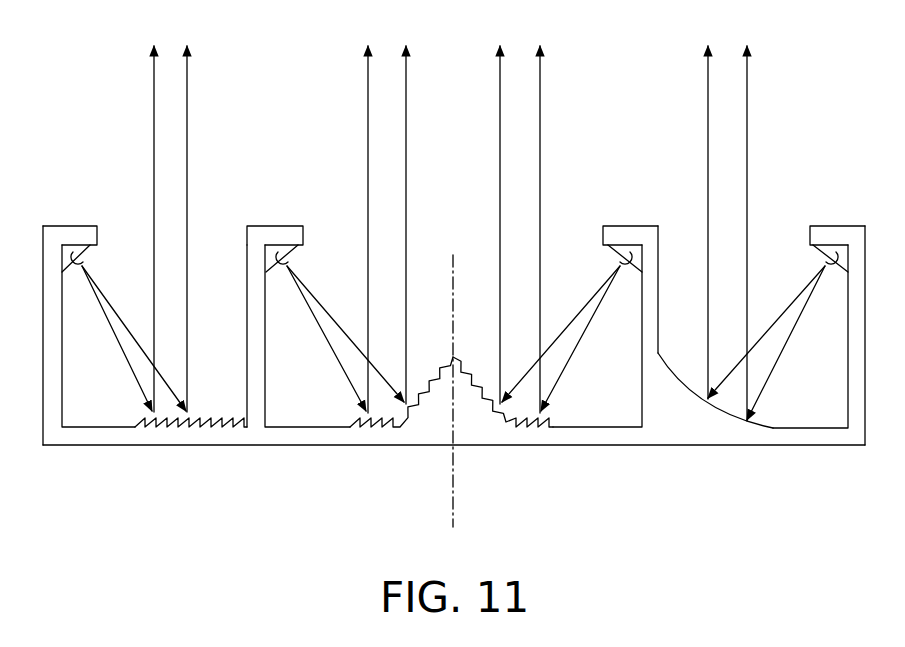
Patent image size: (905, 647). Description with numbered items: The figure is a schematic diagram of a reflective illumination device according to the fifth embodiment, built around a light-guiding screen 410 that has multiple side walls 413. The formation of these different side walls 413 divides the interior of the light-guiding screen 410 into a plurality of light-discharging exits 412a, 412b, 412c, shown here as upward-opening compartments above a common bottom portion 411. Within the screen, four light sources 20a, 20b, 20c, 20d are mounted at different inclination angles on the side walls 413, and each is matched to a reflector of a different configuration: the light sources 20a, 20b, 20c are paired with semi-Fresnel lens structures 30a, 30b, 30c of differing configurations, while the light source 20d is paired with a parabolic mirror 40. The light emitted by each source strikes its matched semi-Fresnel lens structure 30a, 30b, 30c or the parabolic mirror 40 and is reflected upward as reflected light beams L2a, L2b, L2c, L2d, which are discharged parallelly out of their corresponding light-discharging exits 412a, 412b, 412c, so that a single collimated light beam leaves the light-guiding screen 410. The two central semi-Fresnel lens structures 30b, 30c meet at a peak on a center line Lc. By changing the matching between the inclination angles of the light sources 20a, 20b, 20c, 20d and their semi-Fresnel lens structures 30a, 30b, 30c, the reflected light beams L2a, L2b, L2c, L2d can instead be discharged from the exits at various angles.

The light-guiding screen 410 is at (801, 466).
The bottom plate 411 is at (606, 446).
The light-discharging exit 412a is at (453, 243).
The light-discharging exit 412b is at (783, 257).
The light-discharging exit 412c is at (125, 254).
The side wall 413 is at (43, 270).
The light source 20a is at (80, 270).
The light source 20b is at (610, 262).
The light source 20c is at (305, 262).
The light source 20d is at (829, 272).
The semi-Fresnel lens structure 30a is at (217, 409).
The semi-Fresnel lens structure 30b is at (478, 363).
The semi-Fresnel lens structure 30c is at (428, 363).
The parabolic mirror 40 is at (684, 381).
The reflected light beam L2a is at (154, 106).
The reflected light beam L2b is at (540, 118).
The reflected light beam L2c is at (368, 123).
The reflected light beam L2d is at (747, 120).
The central axis Lc is at (452, 520).